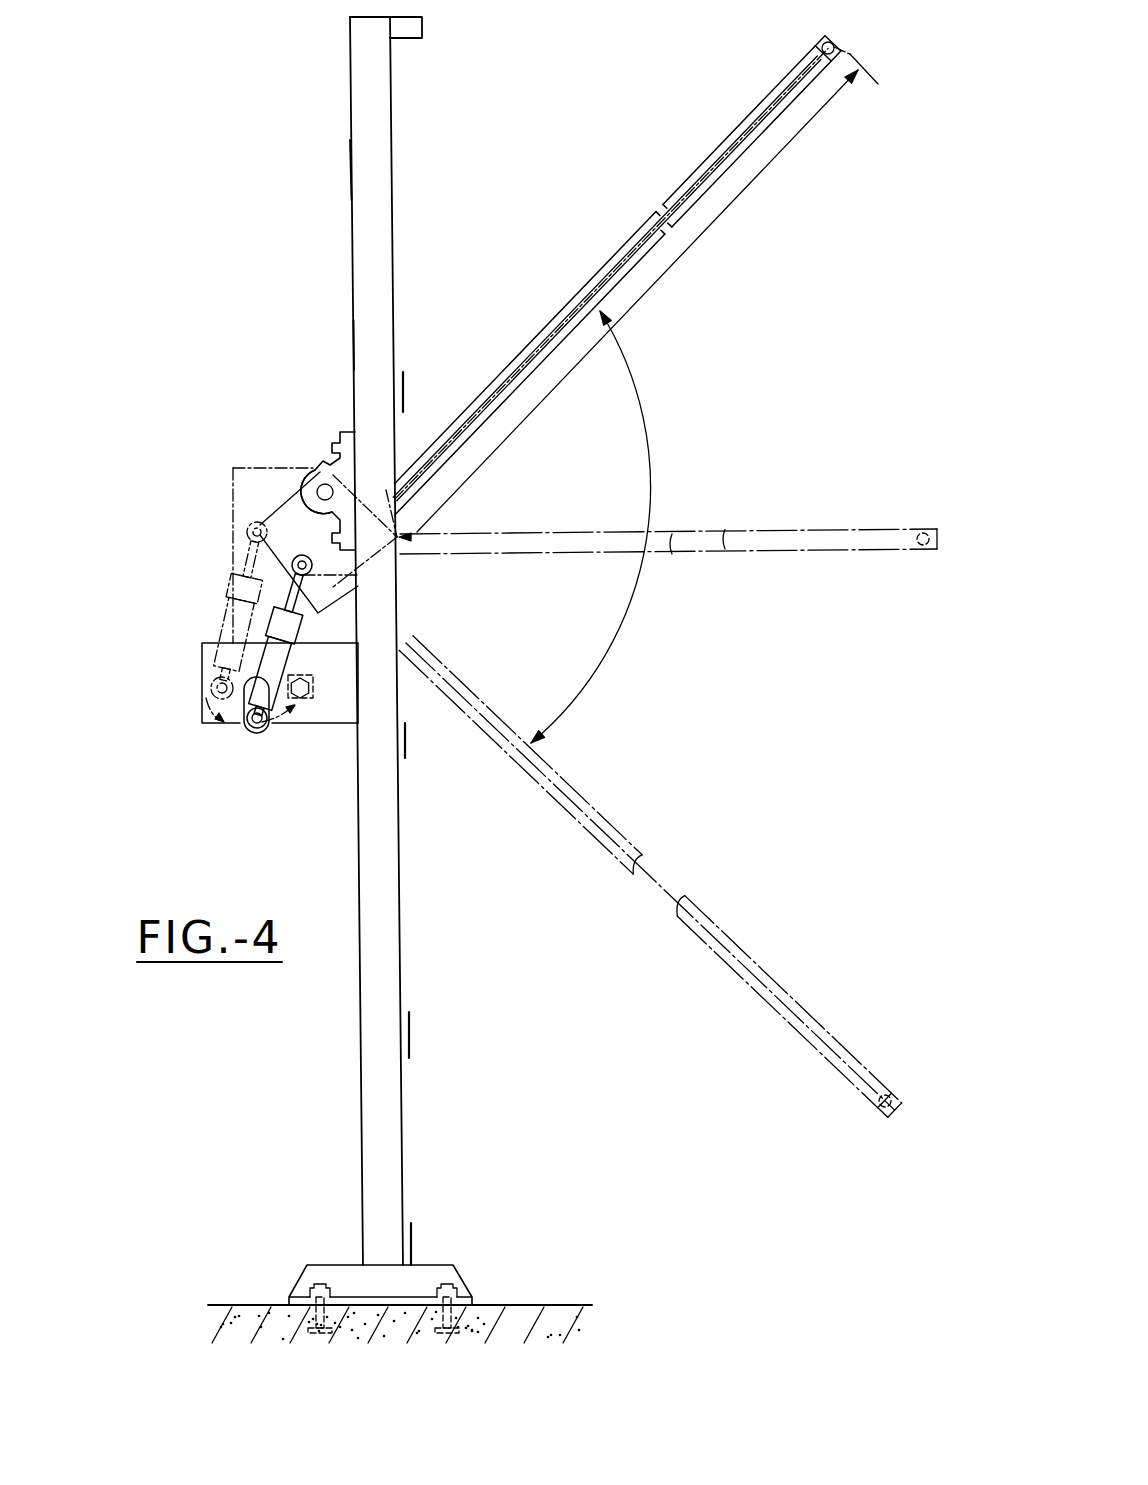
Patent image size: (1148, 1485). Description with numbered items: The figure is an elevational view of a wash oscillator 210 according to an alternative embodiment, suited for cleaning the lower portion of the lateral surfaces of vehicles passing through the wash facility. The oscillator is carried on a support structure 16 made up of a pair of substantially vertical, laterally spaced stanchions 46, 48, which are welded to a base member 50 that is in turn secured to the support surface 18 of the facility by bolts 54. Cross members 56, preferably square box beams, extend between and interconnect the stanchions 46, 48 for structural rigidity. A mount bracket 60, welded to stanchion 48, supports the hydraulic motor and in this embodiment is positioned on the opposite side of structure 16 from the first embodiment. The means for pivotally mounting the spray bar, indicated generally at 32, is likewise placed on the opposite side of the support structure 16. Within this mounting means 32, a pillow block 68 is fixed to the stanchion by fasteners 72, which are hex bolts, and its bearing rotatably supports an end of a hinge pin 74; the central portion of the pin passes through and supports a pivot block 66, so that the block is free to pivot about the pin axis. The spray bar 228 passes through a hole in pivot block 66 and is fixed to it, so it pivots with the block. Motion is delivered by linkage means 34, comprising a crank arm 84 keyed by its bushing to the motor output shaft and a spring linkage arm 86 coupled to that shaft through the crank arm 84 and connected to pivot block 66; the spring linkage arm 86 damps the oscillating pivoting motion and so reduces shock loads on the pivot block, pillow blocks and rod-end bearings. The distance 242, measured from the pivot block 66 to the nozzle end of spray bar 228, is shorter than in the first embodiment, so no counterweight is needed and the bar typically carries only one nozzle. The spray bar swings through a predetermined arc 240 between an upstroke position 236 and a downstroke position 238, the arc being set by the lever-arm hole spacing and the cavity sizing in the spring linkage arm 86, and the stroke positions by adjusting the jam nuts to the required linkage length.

The support structure 16 is at (346, 70).
The stanchion 48 is at (353, 168).
The stanchion 46 is at (366, 344).
The cross members 56 is at (405, 380).
The wash oscillator 210 is at (209, 448).
The mounting means 32 is at (228, 500).
The fasteners 72 is at (332, 448).
The first pillow block 68 is at (322, 470).
The hinge pin 74 is at (318, 485).
The pivot block 66 is at (358, 588).
The spring linkage arm 86 is at (225, 610).
The crank arm 84 is at (200, 690).
The linkage means 34 is at (209, 735).
The mount bracket 60 is at (335, 718).
The spray bar 228 is at (636, 255).
The distance 242 is at (738, 193).
The predetermined arc 240 is at (604, 655).
The upstroke position 236 is at (605, 312).
The downstroke position 238 is at (535, 742).
The base member 50 is at (335, 1263).
The bolts 54 is at (313, 1290).
The support surface 18 is at (558, 1303).